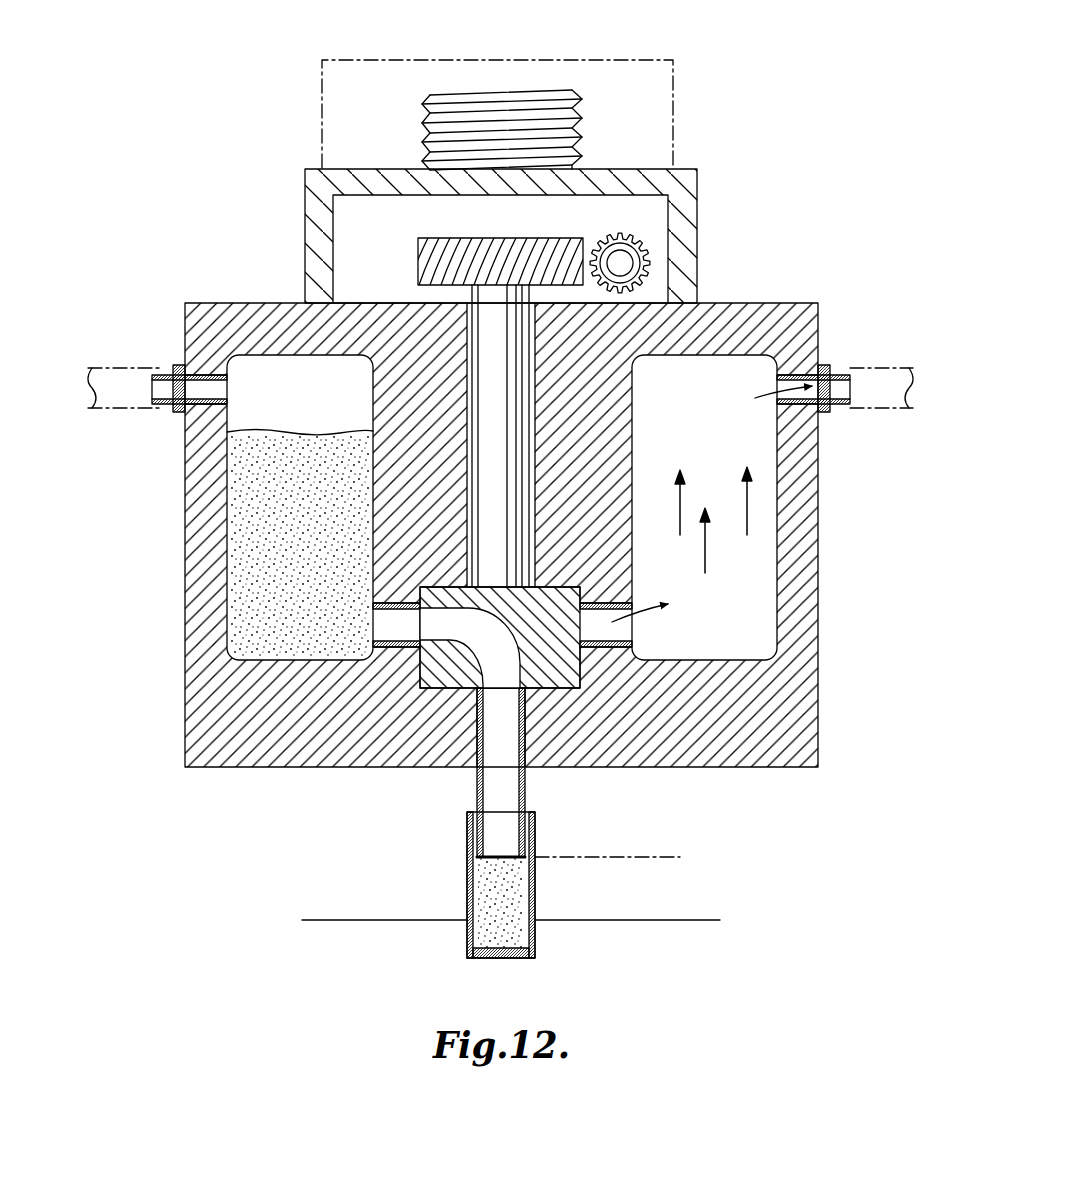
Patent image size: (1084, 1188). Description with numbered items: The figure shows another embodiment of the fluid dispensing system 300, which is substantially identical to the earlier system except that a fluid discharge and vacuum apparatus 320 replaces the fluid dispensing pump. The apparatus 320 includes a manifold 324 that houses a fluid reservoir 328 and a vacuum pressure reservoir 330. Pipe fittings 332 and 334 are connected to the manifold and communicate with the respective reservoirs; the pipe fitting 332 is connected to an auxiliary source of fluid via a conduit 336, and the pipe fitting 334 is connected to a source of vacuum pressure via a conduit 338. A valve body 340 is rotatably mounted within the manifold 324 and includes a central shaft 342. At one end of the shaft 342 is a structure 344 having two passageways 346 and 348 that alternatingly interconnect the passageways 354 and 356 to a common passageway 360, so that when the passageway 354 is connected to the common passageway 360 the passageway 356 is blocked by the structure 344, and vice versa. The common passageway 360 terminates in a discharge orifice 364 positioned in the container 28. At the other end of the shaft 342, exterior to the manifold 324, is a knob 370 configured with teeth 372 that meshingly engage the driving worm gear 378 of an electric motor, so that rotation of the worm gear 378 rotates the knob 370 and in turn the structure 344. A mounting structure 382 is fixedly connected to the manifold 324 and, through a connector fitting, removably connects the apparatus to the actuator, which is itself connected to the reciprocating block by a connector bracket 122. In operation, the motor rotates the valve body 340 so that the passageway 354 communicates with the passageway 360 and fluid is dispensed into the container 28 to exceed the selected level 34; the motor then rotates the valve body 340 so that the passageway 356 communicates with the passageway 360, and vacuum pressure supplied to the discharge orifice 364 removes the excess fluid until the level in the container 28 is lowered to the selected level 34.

The system 300 is at (205, 110).
The connector bracket 122 is at (322, 98).
The fluid discharge and vacuum apparatus 320 is at (218, 290).
The manifold 324 is at (818, 732).
The fluid reservoir 328 is at (245, 575).
The vacuum pressure reservoir 330 is at (765, 530).
The pipe fitting 332 is at (178, 365).
The pipe fitting 334 is at (826, 365).
The conduit 336 is at (442, 100).
The conduit 338 is at (862, 365).
The valve body 340 is at (467, 363).
The central shaft 342 is at (527, 390).
The structure 344 is at (545, 635).
The passageway 346 is at (470, 645).
The passageway 348 is at (523, 608).
The passageway 354 is at (388, 628).
The passageway 356 is at (640, 602).
The common passageway 360 is at (503, 717).
The discharge orifice 364 is at (500, 860).
The container 28 is at (467, 870).
The selected level 34 is at (655, 857).
The knob 370 is at (463, 236).
The teeth 372 is at (453, 263).
The worm gear 378 is at (645, 252).
The mounting structure 382 is at (697, 169).